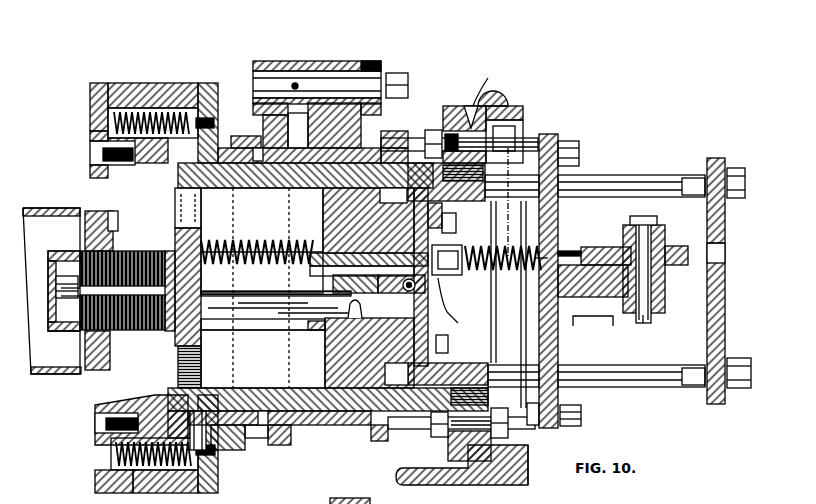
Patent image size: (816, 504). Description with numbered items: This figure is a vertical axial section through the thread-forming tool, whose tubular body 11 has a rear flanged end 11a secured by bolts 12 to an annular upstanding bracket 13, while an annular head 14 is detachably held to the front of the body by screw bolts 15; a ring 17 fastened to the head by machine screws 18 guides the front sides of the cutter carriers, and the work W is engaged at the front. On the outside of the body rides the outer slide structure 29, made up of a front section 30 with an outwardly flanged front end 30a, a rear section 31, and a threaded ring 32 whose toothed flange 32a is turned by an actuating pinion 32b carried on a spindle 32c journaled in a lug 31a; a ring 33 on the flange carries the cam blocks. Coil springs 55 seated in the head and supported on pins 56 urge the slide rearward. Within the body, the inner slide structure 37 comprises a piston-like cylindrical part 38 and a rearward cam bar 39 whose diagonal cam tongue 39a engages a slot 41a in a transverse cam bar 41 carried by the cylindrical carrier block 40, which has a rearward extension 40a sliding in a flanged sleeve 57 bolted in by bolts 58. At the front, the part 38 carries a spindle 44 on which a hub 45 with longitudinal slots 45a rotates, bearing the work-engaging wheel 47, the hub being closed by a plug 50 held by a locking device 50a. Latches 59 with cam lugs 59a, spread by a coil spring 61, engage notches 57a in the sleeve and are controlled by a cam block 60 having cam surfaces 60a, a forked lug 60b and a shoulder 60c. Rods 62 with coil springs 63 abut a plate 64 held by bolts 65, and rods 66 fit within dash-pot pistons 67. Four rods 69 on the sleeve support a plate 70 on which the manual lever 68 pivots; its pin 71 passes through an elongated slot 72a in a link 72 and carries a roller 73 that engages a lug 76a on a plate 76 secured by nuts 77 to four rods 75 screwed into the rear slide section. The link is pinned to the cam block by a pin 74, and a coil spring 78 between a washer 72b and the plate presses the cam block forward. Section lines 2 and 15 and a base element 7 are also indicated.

The workpiece W is at (28, 200).
The section line 2 is at (482, 118).
The frame plate 7 is at (192, 75).
The tubular body 11 is at (435, 98).
The rear flanged end 11a is at (486, 274).
The bolts 12 is at (488, 86).
The annular upstanding bracket 13 is at (505, 98).
The annular head 14 is at (362, 22).
The screw bolts 15 is at (790, 92).
The ring 17 is at (82, 140).
The machine screws 18 is at (82, 150).
The slide structure 29 is at (298, 457).
The front section 30 is at (220, 128).
The outwardly flanged front end 30a is at (203, 76).
The rear section 31 is at (373, 123).
The lug 31a is at (378, 64).
The ring 32 is at (250, 442).
The toothed flange 32a is at (250, 95).
The actuating pinion 32b is at (268, 53).
The spindle 32c is at (400, 75).
The ring 33 is at (110, 75).
The inner slide structure 37 is at (263, 359).
The piston-like cylindrical part 38 is at (170, 358).
The cam bar 39 is at (252, 322).
The cam tongue 39a is at (276, 284).
The carrier block 40 is at (328, 287).
The rearward extension 40a is at (365, 229).
The cam bar 41 is at (361, 353).
The slot 41a is at (347, 322).
The spindle 44 is at (155, 245).
The hub 45 is at (140, 325).
The longitudinal slots 45a is at (124, 221).
The work-engaging wheel 47 is at (85, 362).
The plug 50 is at (60, 243).
The screw-actuated locking device 50a is at (63, 344).
The coil springs 55 is at (90, 80).
The pins 56 is at (148, 76).
The flanged sleeve 57 is at (448, 360).
The notches 57a is at (446, 181).
The bolts 58 is at (522, 437).
The latches 59 is at (456, 315).
The cam lugs 59a is at (465, 305).
The cam block 60 is at (353, 243).
The cam surfaces 60a is at (398, 245).
The forked lug 60b is at (440, 267).
The shoulder 60c is at (452, 215).
The coil spring 61 is at (398, 284).
The rods 62 is at (230, 232).
The coil spring 63 is at (252, 233).
The plate 64 is at (448, 348).
The bolts 65 is at (445, 337).
The rods 66 is at (267, 369).
The sleeve-like pistons 67 is at (306, 322).
The manual lever 68 is at (648, 226).
The rods 69 is at (642, 166).
The plate 70 is at (717, 275).
The pin 71 is at (636, 315).
The link 72 is at (590, 239).
The elongated slot 72a is at (697, 236).
The washer 72b is at (518, 242).
The roller 73 is at (665, 257).
The pin 74 is at (458, 226).
The rods 75 is at (520, 130).
The plate 76 is at (545, 127).
The lug 76a is at (593, 329).
The nuts 77 is at (565, 133).
The coil spring 78 is at (495, 262).